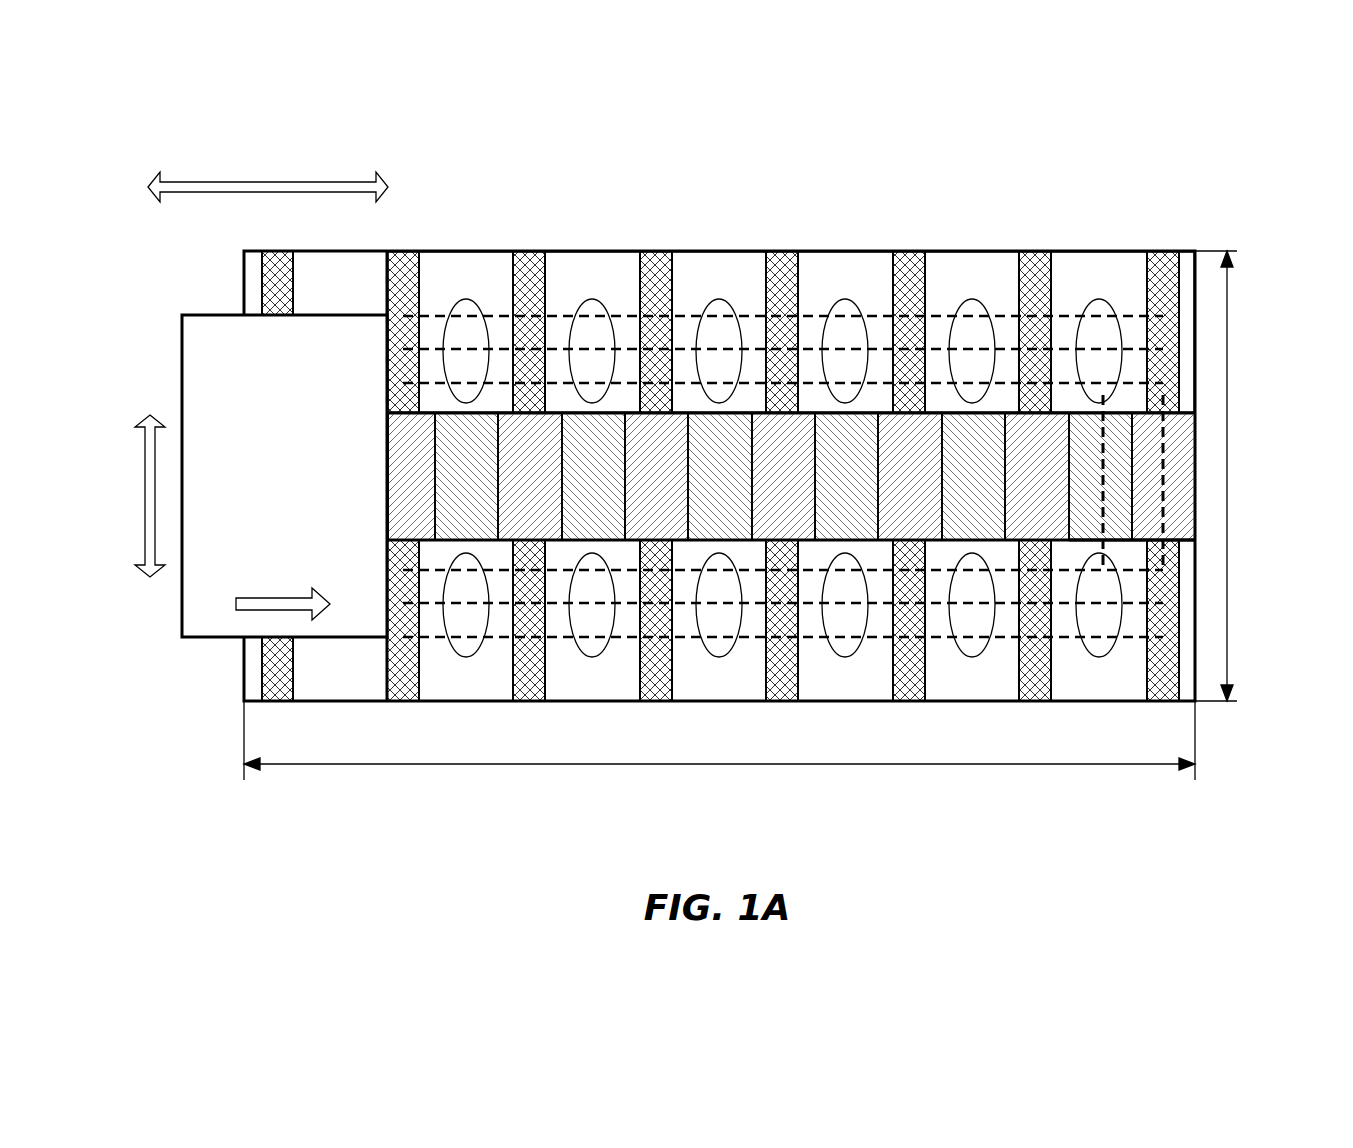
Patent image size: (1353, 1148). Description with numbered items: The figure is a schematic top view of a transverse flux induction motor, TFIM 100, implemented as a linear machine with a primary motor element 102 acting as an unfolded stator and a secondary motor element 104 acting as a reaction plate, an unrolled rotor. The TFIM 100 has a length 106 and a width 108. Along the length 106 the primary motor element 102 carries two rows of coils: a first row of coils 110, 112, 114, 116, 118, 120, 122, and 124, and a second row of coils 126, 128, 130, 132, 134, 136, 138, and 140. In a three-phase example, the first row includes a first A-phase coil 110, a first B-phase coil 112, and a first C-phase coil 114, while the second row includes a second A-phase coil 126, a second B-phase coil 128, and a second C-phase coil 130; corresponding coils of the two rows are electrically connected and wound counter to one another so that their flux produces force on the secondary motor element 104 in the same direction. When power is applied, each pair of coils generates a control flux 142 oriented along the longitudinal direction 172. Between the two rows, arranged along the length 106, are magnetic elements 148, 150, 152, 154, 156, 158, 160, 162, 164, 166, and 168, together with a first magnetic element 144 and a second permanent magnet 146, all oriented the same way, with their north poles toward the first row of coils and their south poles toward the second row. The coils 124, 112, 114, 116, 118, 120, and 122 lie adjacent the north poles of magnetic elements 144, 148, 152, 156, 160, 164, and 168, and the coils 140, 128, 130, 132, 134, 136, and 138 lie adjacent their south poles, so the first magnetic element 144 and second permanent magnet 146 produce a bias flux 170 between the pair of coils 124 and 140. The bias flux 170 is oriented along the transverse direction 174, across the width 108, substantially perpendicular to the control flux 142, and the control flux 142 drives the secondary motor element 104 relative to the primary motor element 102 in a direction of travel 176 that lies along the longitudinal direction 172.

The transverse flux induction motor (TFIM) 100 is at (1132, 180).
The primary motor element 102 is at (624, 251).
The secondary motor element 104 is at (284, 476).
The length 106 is at (812, 765).
The width 108 is at (1228, 650).
The first A-phase coil 110 is at (277, 251).
The first B-phase coil 112 is at (402, 251).
The first C-phase coil 114 is at (528, 251).
The coil 116 is at (655, 251).
The coil 118 is at (781, 251).
The coil 120 is at (908, 251).
The coil 122 is at (1034, 251).
The coil 124 is at (1162, 251).
The second A-phase coil 126 is at (278, 701).
The second B-phase coil 128 is at (403, 701).
The second C-phase coil 130 is at (529, 701).
The coil 132 is at (656, 701).
The coil 134 is at (782, 701).
The coil 136 is at (909, 701).
The coil 138 is at (1035, 701).
The coil 140 is at (1163, 701).
The control flux 142 is at (783, 478).
The first magnetic element 144 is at (1196, 438).
The second permanent magnet 146 is at (1122, 542).
The magnetic element 148 is at (411, 476).
The magnetic element 150 is at (466, 476).
The magnetic element 152 is at (530, 476).
The magnetic element 154 is at (593, 476).
The magnetic element 156 is at (656, 476).
The magnetic element 158 is at (720, 476).
The magnetic element 160 is at (783, 476).
The magnetic element 162 is at (846, 476).
The magnetic element 164 is at (910, 476).
The magnetic element 166 is at (973, 476).
The magnetic element 168 is at (1037, 476).
The bias flux 170 is at (1160, 473).
The longitudinal direction 172 is at (277, 186).
The transverse direction 174 is at (150, 414).
The direction of travel 176 is at (300, 597).